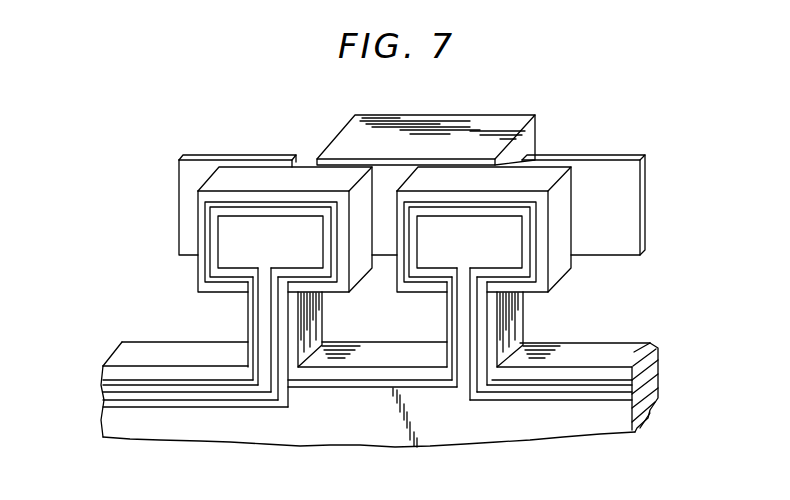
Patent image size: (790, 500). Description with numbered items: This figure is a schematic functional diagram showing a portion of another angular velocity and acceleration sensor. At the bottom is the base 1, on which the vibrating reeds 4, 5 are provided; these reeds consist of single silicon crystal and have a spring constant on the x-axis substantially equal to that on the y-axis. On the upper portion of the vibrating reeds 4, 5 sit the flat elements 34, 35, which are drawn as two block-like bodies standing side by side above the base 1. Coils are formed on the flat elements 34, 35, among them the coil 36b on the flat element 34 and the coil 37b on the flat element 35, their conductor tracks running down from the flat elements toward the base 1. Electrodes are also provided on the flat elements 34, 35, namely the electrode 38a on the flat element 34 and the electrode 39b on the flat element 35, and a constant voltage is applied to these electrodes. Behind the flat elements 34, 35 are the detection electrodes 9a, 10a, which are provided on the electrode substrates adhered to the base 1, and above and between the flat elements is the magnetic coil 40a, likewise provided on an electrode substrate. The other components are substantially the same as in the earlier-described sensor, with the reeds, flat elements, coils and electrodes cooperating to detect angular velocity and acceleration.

The base 1 is at (493, 428).
The vibrating reed 4 is at (312, 322).
The vibrating reed 5 is at (510, 322).
The detection electrode 9a is at (188, 170).
The detection electrode 10a is at (632, 186).
The flat element 34 is at (256, 264).
The flat element 35 is at (511, 261).
The coil 36b is at (228, 284).
The coil 37b is at (533, 288).
The electrode 38a is at (257, 223).
The electrode 39b is at (502, 225).
The magnetic coil 40a is at (457, 113).